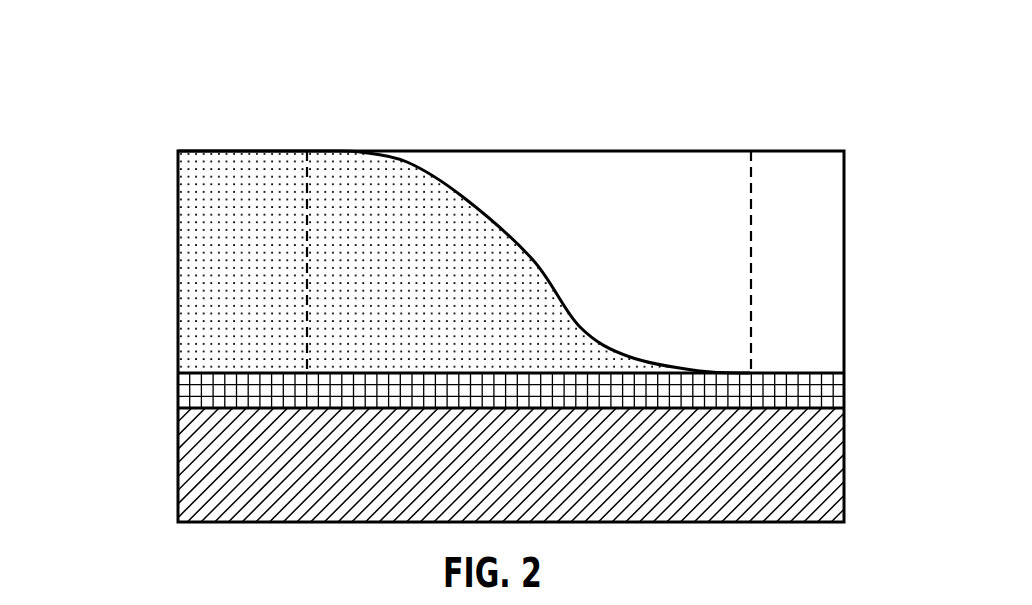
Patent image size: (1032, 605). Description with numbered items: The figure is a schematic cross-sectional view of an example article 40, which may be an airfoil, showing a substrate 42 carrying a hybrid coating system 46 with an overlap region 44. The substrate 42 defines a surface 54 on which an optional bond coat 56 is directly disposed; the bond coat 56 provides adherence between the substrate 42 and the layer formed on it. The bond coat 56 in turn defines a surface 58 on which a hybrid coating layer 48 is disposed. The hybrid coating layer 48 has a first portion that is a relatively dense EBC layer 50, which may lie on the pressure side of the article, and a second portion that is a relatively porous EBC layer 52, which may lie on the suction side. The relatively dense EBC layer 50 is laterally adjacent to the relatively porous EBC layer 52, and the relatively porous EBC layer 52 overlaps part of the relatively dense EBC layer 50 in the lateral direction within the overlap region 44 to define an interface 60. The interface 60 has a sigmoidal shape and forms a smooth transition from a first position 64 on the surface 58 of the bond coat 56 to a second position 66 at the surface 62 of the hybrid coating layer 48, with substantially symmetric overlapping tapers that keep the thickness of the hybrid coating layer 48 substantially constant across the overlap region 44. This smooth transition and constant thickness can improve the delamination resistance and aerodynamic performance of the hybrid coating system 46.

The article 40 is at (100, 50).
The substrate 42 is at (176, 485).
The overlap region 44 is at (750, 142).
The hybrid coating system 46 is at (848, 152).
The hybrid coating layer 48 is at (173, 152).
The relatively dense EBC layer 50 is at (243, 185).
The relatively porous EBC layer 52 is at (797, 188).
The surface 54 is at (186, 423).
The bond coat 56 is at (848, 410).
The surface 58 is at (186, 383).
The interface 60 is at (534, 256).
The surface 62 is at (197, 147).
The first position 64 is at (755, 367).
The second position 66 is at (300, 147).